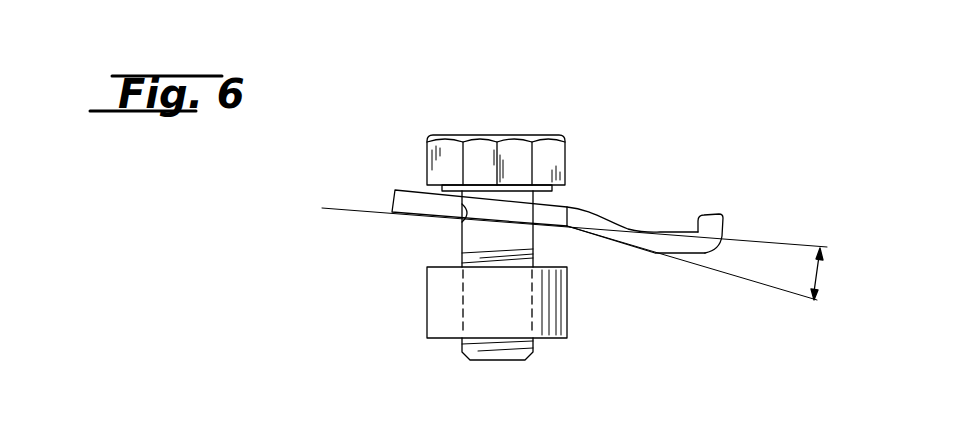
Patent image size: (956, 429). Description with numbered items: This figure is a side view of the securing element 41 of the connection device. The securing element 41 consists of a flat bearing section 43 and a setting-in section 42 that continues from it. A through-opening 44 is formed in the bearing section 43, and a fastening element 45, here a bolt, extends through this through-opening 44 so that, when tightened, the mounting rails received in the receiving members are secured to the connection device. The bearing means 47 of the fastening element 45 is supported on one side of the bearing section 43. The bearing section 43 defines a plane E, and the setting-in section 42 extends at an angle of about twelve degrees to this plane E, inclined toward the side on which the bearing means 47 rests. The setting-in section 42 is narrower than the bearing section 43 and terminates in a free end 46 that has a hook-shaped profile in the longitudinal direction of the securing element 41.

The securing element 41 is at (418, 83).
The setting-in section 42 is at (610, 225).
The bearing section 43 is at (423, 208).
The through-opening 44 is at (460, 224).
The fastening element 45 is at (524, 128).
The free end 46 is at (716, 214).
The bearing means 47 is at (556, 154).
The plane E is at (326, 207).